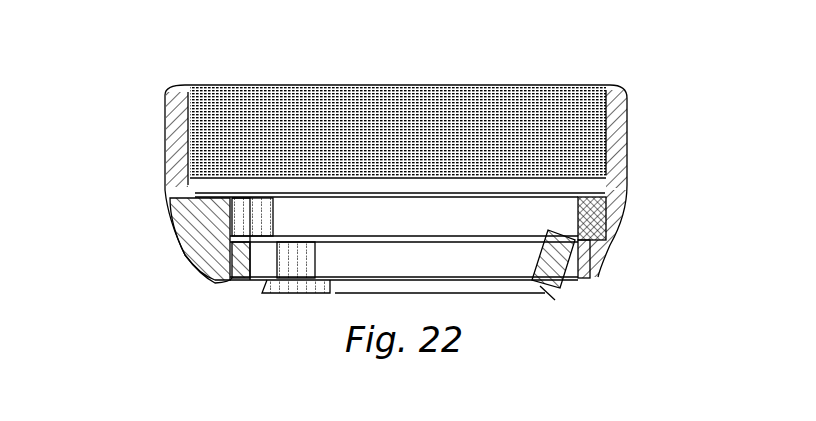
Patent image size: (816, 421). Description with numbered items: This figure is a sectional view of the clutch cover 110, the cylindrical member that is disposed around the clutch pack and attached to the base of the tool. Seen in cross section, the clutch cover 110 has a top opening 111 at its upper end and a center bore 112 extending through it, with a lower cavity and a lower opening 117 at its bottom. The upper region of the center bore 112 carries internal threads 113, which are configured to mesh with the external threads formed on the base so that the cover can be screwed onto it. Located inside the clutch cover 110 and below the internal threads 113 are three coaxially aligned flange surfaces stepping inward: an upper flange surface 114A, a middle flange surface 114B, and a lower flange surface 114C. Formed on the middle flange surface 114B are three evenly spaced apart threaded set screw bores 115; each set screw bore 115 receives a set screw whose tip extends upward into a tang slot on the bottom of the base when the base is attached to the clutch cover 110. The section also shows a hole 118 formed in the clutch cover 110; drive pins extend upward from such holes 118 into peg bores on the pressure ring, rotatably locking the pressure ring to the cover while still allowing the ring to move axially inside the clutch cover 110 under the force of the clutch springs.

The clutch cover 110 is at (160, 82).
The top opening 111 is at (283, 87).
The center bore 112 is at (386, 88).
The internal threads 113 is at (470, 87).
The upper flange surface 114A is at (548, 197).
The middle flange surface 114B is at (462, 265).
The lower flange surface 114C is at (558, 283).
The set screw bore 115 is at (598, 212).
The lower opening 117 is at (427, 255).
The hole 118 is at (223, 283).